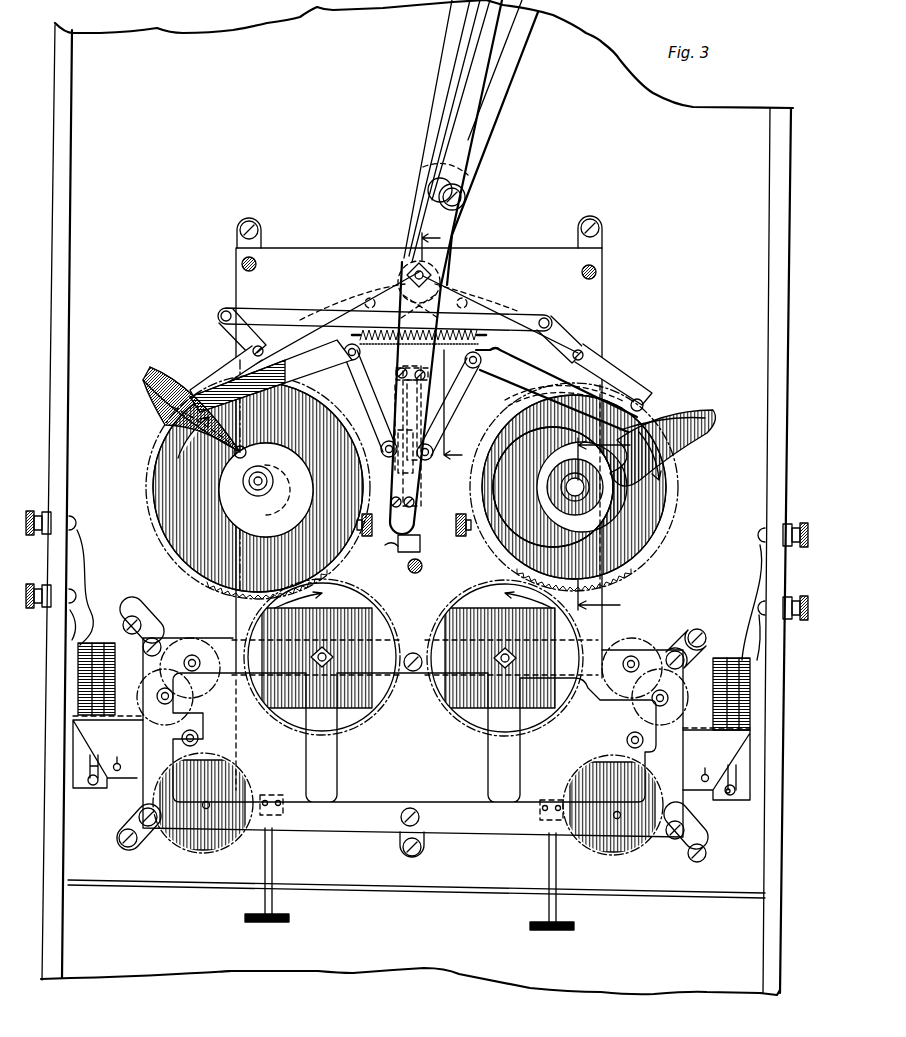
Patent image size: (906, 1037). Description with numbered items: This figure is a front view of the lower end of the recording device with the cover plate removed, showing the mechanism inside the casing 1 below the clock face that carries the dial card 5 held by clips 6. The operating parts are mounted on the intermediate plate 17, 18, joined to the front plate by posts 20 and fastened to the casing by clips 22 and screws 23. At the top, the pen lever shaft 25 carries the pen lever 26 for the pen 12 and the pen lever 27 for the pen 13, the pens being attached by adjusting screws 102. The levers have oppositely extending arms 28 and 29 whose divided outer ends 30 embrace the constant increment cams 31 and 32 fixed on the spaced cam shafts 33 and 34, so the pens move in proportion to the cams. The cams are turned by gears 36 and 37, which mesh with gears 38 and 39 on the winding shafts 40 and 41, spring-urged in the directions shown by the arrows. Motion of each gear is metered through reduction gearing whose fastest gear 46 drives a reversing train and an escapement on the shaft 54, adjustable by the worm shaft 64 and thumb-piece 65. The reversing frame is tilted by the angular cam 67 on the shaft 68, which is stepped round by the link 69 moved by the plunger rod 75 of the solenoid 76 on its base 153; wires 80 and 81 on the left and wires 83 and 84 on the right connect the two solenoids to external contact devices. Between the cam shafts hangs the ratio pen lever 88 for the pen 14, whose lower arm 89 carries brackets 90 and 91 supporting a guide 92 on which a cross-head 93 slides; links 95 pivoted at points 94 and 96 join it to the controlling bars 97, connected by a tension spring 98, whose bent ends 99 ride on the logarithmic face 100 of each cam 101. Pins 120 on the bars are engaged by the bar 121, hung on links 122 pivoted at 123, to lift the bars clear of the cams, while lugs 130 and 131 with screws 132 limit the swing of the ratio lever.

The casing 1 is at (68, 142).
The dial card 5 is at (442, 339).
The clips 6 is at (604, 517).
The pen 12 is at (448, 40).
The pen 13 is at (462, 93).
The pen 14 is at (504, 93).
The intermediate plate 17 is at (318, 258).
The intermediate plate 18 is at (384, 810).
The posts 20 is at (256, 265).
The clips 22 is at (143, 622).
The screws 23 is at (600, 233).
The pen lever shaft 25 is at (431, 270).
The pen lever 26 is at (426, 200).
The pen lever 27 is at (432, 212).
The arm 28 is at (305, 380).
The arm 29 is at (612, 380).
The outer ends 30 is at (247, 453).
The cam 31 is at (158, 485).
The cam 32 is at (680, 410).
The cam shaft 33 is at (268, 482).
The cam shaft 34 is at (578, 480).
The gear 36 is at (322, 560).
The gear 37 is at (630, 570).
The gear 38 is at (368, 604).
The gear 39 is at (452, 606).
The winding shaft 40 is at (323, 648).
The winding shaft 41 is at (505, 648).
The fastest moving gear 46 is at (194, 736).
The shaft 54 is at (408, 804).
The worm shaft 64 is at (271, 852).
The thumb-piece 65 is at (292, 913).
The angular cam 67 is at (120, 786).
The shaft 68 is at (412, 761).
The link 69 is at (731, 804).
The plunger rod 75 is at (90, 762).
The solenoid 76 is at (97, 645).
The circuit wire 80 is at (84, 562).
The circuit wire 81 is at (70, 630).
The wire 83 is at (758, 588).
The wire 84 is at (752, 657).
The ratio pen lever 88 is at (457, 221).
The lower arm 89 is at (396, 386).
The bracket 90 is at (398, 370).
The bracket 91 is at (392, 498).
The guide 92 is at (430, 391).
The cross-head 93 is at (416, 468).
The pivot points 94 is at (385, 456).
The links 95 is at (372, 414).
The pivot points 96 is at (344, 356).
The controlling bars 97 is at (342, 300).
The tension spring 98 is at (419, 345).
The outer ends 99 is at (195, 395).
The logarithmic face 100 is at (297, 532).
The cam 101 is at (255, 525).
The screws 102 is at (462, 190).
The pins 120 is at (369, 297).
The bar 121 is at (516, 316).
The links 122 is at (236, 330).
The pivots 123 is at (252, 351).
The lug 130 is at (397, 549).
The lug 131 is at (456, 520).
The screws 132 is at (366, 536).
The base 153 is at (125, 736).